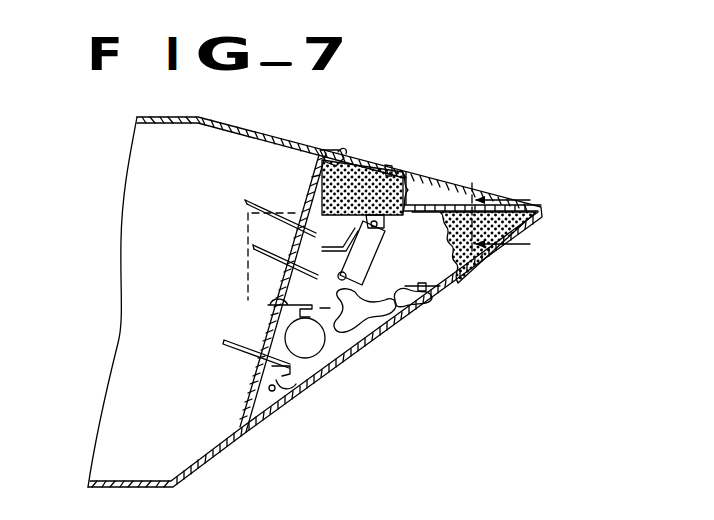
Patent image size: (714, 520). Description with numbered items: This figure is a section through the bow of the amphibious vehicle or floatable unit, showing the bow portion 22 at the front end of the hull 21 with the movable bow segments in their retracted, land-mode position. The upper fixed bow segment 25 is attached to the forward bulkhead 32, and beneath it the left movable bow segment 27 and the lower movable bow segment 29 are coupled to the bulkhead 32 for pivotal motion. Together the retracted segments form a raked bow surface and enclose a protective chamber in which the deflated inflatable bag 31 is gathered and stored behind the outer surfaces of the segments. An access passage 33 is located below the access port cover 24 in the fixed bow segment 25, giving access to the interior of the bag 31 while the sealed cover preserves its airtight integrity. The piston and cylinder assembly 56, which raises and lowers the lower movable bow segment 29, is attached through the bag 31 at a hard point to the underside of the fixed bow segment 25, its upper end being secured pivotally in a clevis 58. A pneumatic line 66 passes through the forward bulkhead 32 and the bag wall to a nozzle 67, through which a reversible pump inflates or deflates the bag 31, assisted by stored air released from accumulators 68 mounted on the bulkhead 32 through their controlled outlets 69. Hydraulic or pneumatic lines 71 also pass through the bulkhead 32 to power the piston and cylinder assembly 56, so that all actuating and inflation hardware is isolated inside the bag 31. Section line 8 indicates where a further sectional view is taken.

The section line 8- 8 is at (511, 221).
The hull 21 is at (130, 270).
The bow portion 22 is at (502, 177).
The access port cover 24 is at (372, 162).
The upper fixed bow segment 25 is at (427, 188).
The left movable bow segment 27 is at (544, 222).
The lower movable bow segment 29 is at (272, 416).
The inflatable bag 31 is at (456, 278).
The forward bulkhead 32 is at (322, 170).
The access passage 33 is at (358, 140).
The piston and cylinder assembly 56 is at (362, 268).
The clevis 58 is at (378, 227).
The pneumatic line 66 is at (222, 344).
The nozzle 67 is at (268, 386).
The accumulators 68 is at (320, 354).
The controlled outlet 69 is at (268, 306).
The hydraulic or pneumatic lines 71 is at (256, 214).